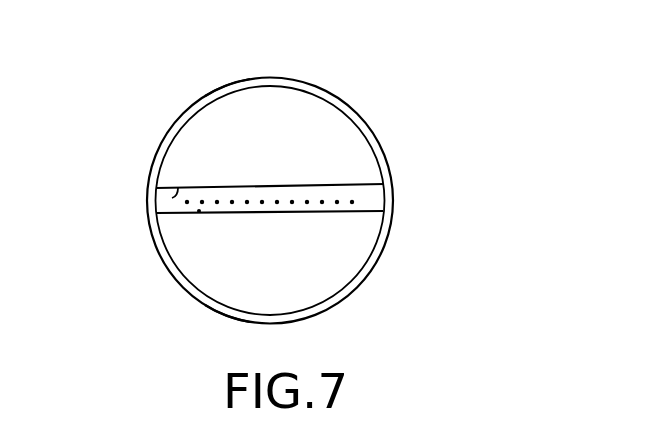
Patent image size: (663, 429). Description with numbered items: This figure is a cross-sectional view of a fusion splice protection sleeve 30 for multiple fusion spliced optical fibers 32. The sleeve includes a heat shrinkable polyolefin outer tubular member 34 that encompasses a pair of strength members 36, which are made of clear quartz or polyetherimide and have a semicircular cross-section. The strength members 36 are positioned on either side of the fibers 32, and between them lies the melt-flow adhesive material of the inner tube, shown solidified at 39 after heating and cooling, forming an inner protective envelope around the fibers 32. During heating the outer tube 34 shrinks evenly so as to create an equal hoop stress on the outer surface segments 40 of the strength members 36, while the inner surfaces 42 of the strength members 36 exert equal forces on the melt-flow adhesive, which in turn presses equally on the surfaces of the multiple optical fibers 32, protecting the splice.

The fusion splice protection sleeve 30 is at (416, 70).
The fusion spliced optical fibers 32 is at (187, 207).
The outer tubular member 34 is at (381, 142).
The strength members 36 is at (353, 164).
The solidified melt-flow adhesive material 39 is at (372, 200).
The outer surface segments 40 is at (241, 95).
The inner surfaces 42 is at (178, 190).